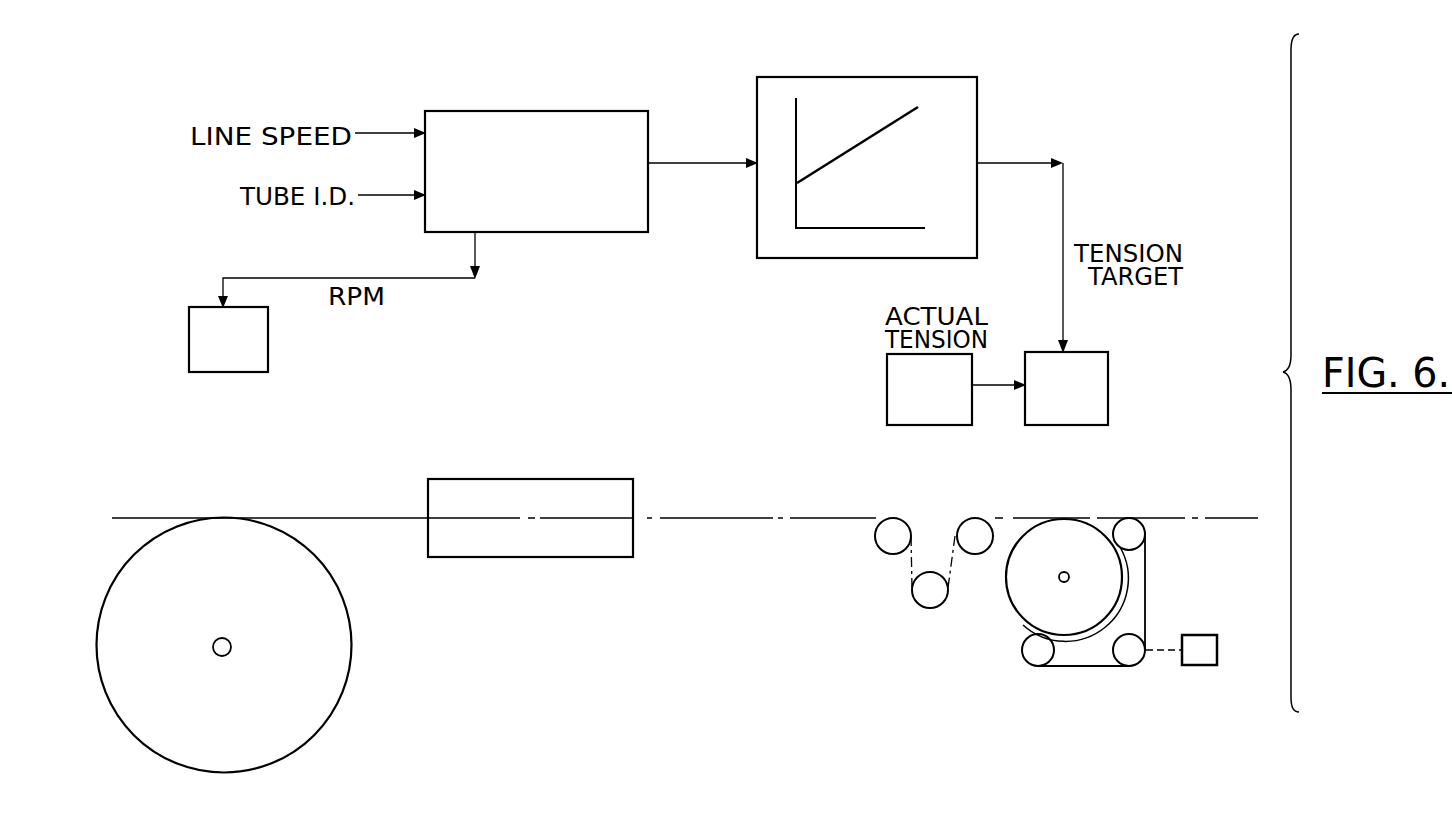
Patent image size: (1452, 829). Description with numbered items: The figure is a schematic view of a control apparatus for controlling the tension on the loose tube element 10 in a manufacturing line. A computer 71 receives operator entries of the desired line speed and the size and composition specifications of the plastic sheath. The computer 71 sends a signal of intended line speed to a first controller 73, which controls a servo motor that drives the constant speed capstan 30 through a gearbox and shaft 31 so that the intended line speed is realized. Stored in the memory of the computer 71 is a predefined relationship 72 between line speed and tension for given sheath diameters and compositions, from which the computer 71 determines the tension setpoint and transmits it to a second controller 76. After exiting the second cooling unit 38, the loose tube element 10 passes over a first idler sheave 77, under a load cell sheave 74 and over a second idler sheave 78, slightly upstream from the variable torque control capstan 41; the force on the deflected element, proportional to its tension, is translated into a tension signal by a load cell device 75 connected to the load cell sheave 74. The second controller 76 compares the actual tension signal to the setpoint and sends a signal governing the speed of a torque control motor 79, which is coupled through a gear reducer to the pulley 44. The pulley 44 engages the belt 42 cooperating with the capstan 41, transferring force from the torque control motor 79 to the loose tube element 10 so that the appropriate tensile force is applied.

The loose tube element 10 is at (799, 508).
The constant speed capstan 30 is at (333, 578).
The shaft 31 is at (229, 641).
The second cooling unit 38 is at (580, 479).
The variable torque control capstan 41 is at (1068, 518).
The belt drive 42 is at (1068, 666).
The pulley 44 is at (1138, 666).
The computer 71 is at (580, 111).
The predefined relationship 72 is at (903, 77).
The first controller 73 is at (268, 363).
The load cell sheave 74 is at (928, 608).
The load cell device 75 is at (938, 425).
The second controller 76 is at (1105, 352).
The first idler sheave 77 is at (890, 554).
The second idler sheave 78 is at (975, 554).
The torque control motor 79 is at (1217, 640).